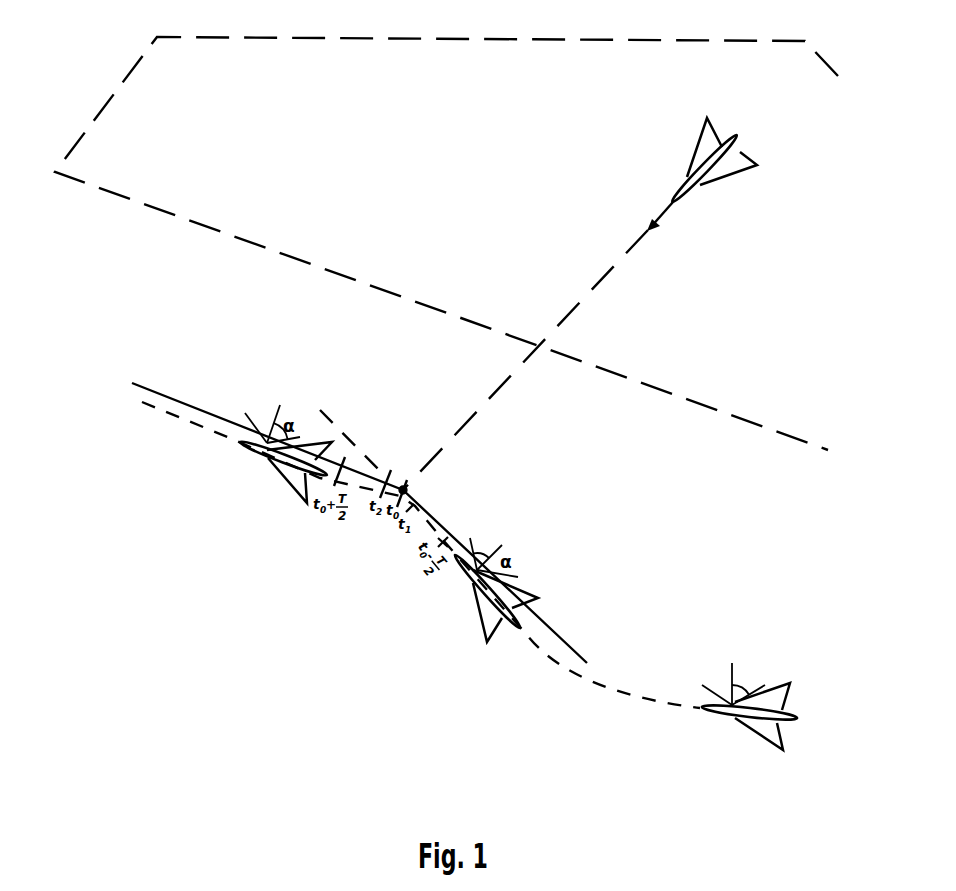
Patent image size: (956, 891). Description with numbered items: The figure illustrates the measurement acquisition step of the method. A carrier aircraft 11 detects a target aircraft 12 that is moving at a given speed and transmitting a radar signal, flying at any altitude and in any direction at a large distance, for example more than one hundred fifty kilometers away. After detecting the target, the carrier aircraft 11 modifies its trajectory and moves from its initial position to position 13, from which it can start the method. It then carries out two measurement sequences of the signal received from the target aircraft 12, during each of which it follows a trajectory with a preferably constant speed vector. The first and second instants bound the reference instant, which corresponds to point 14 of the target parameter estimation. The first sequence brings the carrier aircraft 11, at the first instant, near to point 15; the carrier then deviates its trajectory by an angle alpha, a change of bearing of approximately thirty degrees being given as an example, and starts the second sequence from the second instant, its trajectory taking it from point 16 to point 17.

The carrier aircraft 11 is at (766, 743).
The target aircraft 12 is at (747, 170).
The position 13 is at (452, 534).
The point 14 is at (410, 488).
The point 15 is at (412, 498).
The point 16 is at (390, 474).
The point 17 is at (343, 461).